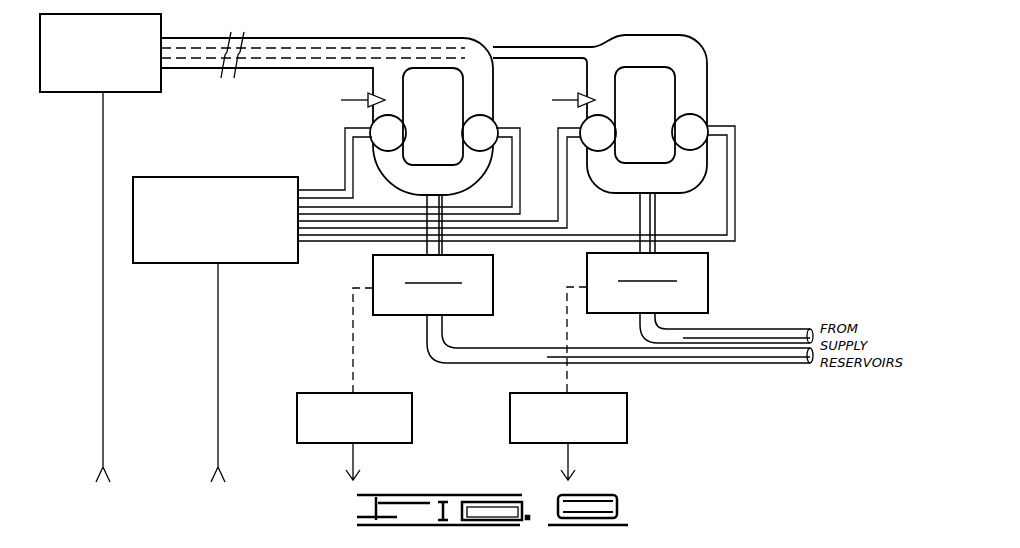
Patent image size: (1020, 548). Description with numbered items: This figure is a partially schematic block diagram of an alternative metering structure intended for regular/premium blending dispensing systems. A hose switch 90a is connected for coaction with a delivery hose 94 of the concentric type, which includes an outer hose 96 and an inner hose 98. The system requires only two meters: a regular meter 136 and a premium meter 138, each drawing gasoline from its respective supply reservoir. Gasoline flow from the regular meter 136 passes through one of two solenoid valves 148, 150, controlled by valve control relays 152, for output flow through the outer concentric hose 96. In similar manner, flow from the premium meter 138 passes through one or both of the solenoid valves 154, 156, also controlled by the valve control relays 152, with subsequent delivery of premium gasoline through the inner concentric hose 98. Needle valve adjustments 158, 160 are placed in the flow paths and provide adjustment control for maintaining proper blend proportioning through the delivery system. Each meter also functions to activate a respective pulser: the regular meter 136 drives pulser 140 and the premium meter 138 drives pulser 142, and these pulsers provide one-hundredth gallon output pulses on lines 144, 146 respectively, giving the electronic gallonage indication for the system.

The hose switch 90a is at (125, 14).
The delivery hose 94 is at (266, 36).
The outer hose 96 is at (402, 36).
The inner hose 98 is at (512, 47).
The solenoid valve 148 is at (406, 126).
The solenoid valve 150 is at (492, 124).
The solenoid valve 154 is at (614, 126).
The solenoid valve 156 is at (708, 118).
The needle valve adjustment 158 is at (357, 100).
The needle valve adjustment 160 is at (566, 100).
The valve control relays 152 is at (222, 177).
The regular meter 136 is at (493, 272).
The premium meter 138 is at (708, 280).
The pulser 140 is at (412, 404).
The pulser 142 is at (627, 412).
The line 144 is at (355, 458).
The line 146 is at (570, 458).